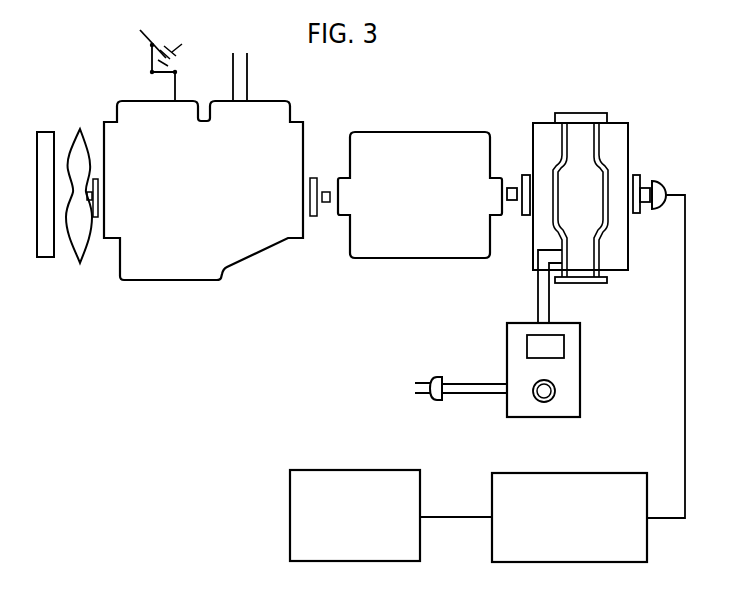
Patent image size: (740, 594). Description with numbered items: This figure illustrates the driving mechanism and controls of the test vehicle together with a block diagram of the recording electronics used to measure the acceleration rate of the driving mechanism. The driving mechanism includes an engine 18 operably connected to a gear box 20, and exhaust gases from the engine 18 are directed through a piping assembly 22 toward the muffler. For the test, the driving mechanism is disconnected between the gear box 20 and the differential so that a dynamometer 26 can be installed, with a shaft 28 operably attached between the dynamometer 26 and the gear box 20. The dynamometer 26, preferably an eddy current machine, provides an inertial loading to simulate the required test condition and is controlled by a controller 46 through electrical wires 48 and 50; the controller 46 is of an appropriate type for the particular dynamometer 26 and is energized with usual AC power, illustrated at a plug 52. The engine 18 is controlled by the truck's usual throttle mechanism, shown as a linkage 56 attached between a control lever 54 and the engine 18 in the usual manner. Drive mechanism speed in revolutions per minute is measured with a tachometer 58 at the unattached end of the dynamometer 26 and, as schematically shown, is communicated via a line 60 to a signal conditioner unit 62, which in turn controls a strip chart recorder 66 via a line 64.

The engine 18 is at (257, 101).
The gear box 20 is at (406, 132).
The piping assembly 22 is at (232, 63).
The dynamometer 26 is at (617, 123).
The shaft 28 is at (512, 187).
The controller 46 is at (580, 383).
The electrical wire 48 is at (538, 301).
The electrical wire 50 is at (549, 299).
The plug 52 is at (432, 376).
The control lever 54 is at (149, 42).
The linkage 56 is at (150, 63).
The tachometer 58 is at (657, 182).
The line 60 is at (685, 370).
The signal conditioner unit 62 is at (576, 473).
The line 64 is at (452, 517).
The strip chart recorder 66 is at (290, 500).